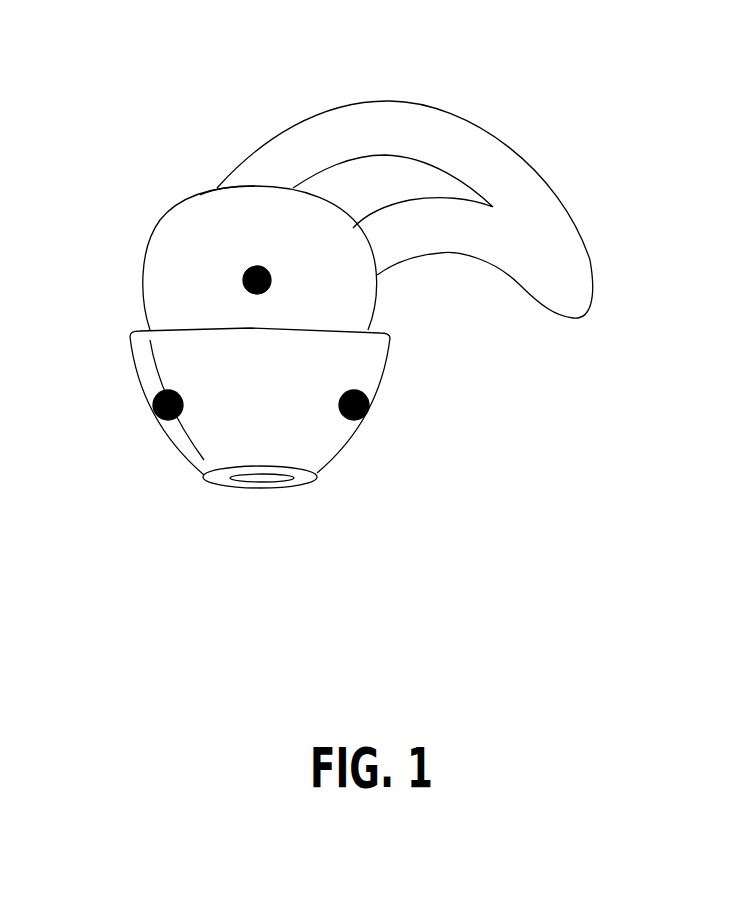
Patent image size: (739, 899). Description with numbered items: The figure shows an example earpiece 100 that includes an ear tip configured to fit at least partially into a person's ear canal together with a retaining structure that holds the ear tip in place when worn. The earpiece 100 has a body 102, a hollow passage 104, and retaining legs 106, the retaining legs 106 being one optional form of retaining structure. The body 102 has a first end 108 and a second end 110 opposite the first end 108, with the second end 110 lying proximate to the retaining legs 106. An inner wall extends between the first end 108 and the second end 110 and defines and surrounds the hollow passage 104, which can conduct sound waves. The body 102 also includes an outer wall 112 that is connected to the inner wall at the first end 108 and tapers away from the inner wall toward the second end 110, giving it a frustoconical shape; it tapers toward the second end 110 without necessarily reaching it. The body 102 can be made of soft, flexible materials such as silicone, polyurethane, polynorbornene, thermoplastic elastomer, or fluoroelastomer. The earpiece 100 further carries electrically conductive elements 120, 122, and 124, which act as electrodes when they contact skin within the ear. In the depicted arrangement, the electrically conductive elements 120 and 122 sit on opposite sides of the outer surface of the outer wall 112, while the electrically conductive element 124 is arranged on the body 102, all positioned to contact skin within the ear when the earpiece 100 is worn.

The earpiece 100 is at (335, 32).
The body 102 is at (153, 238).
The hollow passage 104 is at (261, 509).
The retaining legs 106 is at (431, 182).
The first end 108 is at (340, 503).
The second end 110 is at (208, 185).
The outer wall 112 is at (277, 411).
The electrically conductive element 120 is at (140, 419).
The electrically conductive element 122 is at (380, 419).
The electrically conductive element 124 is at (220, 280).